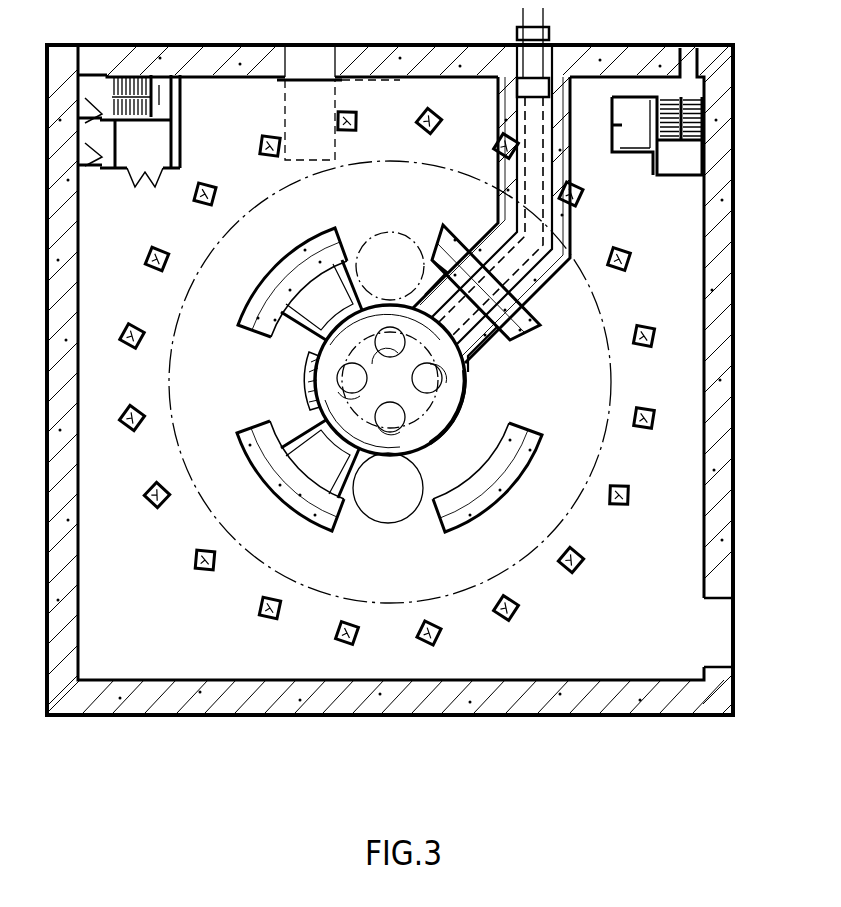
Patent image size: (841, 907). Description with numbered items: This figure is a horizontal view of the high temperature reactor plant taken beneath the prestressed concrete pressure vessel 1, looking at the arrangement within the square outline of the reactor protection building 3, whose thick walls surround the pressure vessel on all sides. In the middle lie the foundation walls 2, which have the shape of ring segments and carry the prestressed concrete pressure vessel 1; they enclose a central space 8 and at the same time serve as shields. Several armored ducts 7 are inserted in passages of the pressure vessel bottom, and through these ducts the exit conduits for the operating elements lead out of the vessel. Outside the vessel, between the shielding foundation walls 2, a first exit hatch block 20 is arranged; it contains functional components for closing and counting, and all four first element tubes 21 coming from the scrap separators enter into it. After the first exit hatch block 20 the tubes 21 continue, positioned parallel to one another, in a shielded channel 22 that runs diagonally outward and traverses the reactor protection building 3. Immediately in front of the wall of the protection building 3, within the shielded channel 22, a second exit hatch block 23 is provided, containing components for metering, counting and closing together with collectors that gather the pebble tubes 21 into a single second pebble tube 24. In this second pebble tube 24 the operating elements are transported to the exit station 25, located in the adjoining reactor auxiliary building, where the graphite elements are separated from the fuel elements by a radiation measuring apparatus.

The prestressed concrete pressure vessel 1 is at (398, 160).
The foundation walls 2 is at (262, 300).
The reactor protection building 3 is at (600, 690).
The armored ducts 7 is at (312, 396).
The space 8 is at (300, 412).
The first exit hatch block 20 is at (497, 338).
The first element tubes 21 is at (575, 213).
The shielded channel 22 is at (568, 163).
The second exit hatch block 23 is at (517, 88).
The second pebble tube 24 is at (535, 66).
The exit station 25 is at (518, 32).